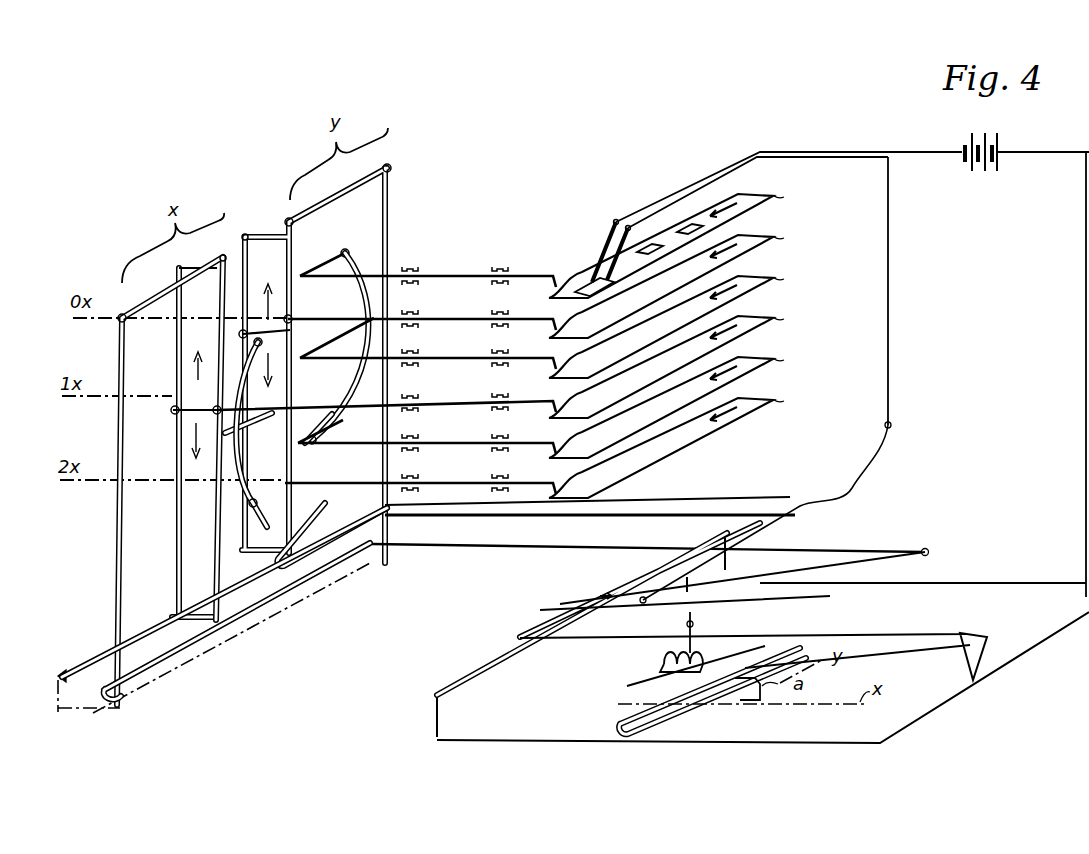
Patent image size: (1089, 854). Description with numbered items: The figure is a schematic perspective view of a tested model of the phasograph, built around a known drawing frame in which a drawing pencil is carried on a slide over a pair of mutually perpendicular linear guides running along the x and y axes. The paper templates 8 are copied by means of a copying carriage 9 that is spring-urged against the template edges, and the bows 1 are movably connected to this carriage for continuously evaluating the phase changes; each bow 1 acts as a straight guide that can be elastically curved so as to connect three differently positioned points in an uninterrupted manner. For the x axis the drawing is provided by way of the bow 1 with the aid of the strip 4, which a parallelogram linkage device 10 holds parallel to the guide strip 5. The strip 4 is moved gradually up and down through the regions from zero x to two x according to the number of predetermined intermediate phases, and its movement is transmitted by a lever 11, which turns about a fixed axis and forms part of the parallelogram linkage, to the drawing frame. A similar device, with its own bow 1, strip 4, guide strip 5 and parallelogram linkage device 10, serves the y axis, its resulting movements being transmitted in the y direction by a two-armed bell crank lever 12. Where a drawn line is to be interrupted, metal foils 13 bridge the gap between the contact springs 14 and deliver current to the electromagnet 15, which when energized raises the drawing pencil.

The bow 1 is at (352, 250).
The strip 4 is at (244, 450).
The guide strip 5 is at (256, 430).
The paper templates 8 is at (746, 196).
The copying carriage 9 is at (458, 284).
The parallelogram linkage device 10 is at (178, 604).
The lever 11 is at (252, 615).
The two-armed bell crank lever 12 is at (416, 508).
The metal foils 13 is at (690, 228).
The contact springs 14 is at (603, 240).
The electromagnet 15 is at (662, 662).